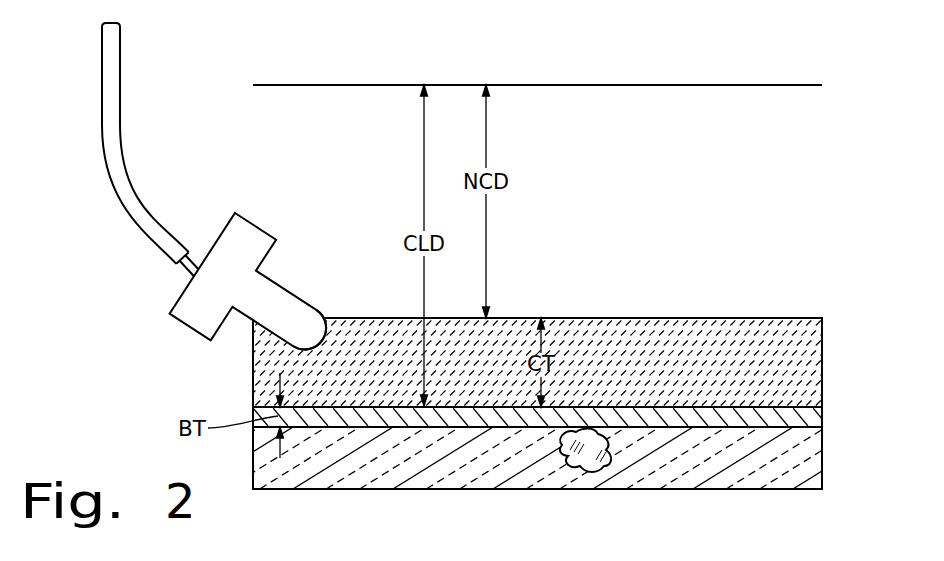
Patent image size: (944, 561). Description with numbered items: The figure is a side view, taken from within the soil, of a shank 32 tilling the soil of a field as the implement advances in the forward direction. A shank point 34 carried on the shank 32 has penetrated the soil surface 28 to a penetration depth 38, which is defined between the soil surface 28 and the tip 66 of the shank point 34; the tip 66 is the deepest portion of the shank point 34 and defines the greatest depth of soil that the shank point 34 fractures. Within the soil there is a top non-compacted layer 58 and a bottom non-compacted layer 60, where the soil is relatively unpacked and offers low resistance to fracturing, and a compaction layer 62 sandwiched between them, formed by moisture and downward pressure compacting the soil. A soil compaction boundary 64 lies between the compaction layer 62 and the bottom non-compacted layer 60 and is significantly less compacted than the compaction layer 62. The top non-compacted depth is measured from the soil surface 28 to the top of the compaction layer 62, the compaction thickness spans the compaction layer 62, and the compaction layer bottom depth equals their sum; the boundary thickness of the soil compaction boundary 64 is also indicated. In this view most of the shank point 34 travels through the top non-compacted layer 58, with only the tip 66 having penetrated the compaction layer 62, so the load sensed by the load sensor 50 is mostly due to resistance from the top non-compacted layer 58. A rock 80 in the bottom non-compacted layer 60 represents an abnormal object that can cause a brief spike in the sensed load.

The soil surface 28 is at (380, 85).
The top non-compacted layer 58 is at (655, 130).
The shank 32 is at (120, 196).
The load sensor 50 is at (185, 258).
The shank point 34 is at (268, 254).
The tip 66 is at (343, 330).
The penetration depth 38 is at (199, 340).
The compaction layer 62 is at (687, 318).
The soil compaction boundary 64 is at (808, 415).
The bottom non-compacted layer 60 is at (725, 470).
The rock 80 is at (577, 470).